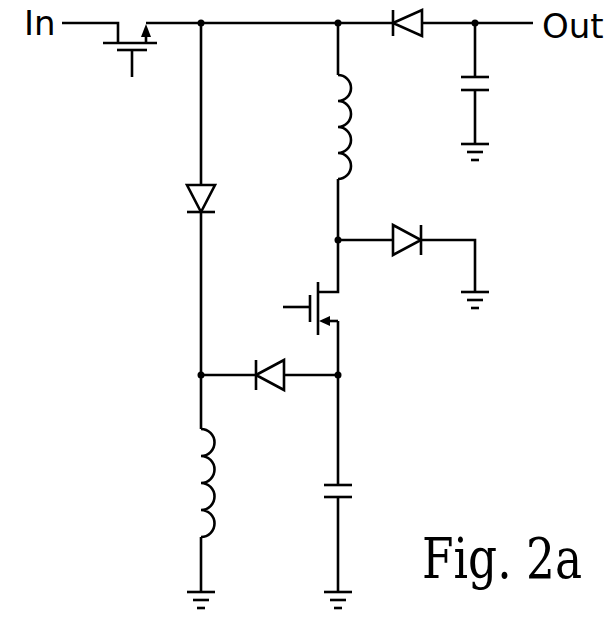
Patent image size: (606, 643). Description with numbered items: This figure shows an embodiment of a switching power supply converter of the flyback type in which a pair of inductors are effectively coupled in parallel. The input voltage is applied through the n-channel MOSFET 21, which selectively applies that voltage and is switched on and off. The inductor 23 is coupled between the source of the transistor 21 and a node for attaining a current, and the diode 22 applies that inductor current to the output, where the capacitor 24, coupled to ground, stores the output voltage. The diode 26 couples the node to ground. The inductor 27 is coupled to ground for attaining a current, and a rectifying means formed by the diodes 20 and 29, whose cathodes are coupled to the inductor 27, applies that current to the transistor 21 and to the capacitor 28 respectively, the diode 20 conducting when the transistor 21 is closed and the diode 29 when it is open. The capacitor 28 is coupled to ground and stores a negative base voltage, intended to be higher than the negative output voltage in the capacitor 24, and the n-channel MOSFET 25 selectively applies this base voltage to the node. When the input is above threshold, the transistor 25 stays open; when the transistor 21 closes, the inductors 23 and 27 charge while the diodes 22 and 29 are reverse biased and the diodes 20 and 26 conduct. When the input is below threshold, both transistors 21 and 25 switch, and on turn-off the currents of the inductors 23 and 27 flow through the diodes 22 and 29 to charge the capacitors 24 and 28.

The diode 20 is at (193, 214).
The n-channel MOSFET 21 is at (103, 44).
The diode 22 is at (408, 37).
The inductor 23 is at (351, 172).
The capacitor 24 is at (481, 92).
The n-channel MOSFET 25 is at (317, 283).
The diode 26 is at (400, 253).
The inductor 27 is at (215, 527).
The capacitor 28 is at (345, 499).
The diode 29 is at (272, 389).